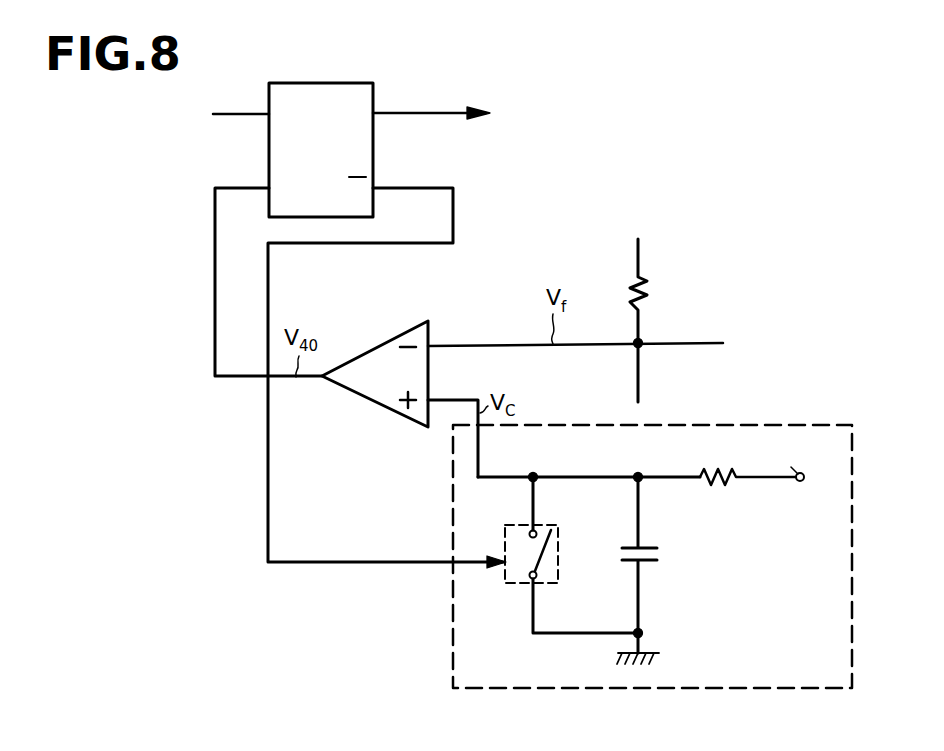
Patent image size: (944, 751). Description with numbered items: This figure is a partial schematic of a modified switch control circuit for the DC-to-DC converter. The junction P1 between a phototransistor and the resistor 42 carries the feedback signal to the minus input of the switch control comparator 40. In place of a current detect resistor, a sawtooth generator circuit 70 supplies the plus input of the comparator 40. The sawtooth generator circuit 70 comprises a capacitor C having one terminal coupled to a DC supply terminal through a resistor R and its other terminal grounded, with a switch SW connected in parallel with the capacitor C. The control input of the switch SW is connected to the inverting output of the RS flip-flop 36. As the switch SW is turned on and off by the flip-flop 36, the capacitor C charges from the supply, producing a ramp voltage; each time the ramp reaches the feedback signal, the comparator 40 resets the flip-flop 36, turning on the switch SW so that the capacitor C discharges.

The RS flip-flop 36 is at (374, 104).
The switch control comparator 40 is at (379, 346).
The resistor 42 is at (642, 284).
The sawtooth generator circuit 70 is at (693, 423).
The junction P1 is at (643, 341).
The resistor R is at (718, 471).
The switch SW is at (558, 583).
The capacitor C is at (647, 563).